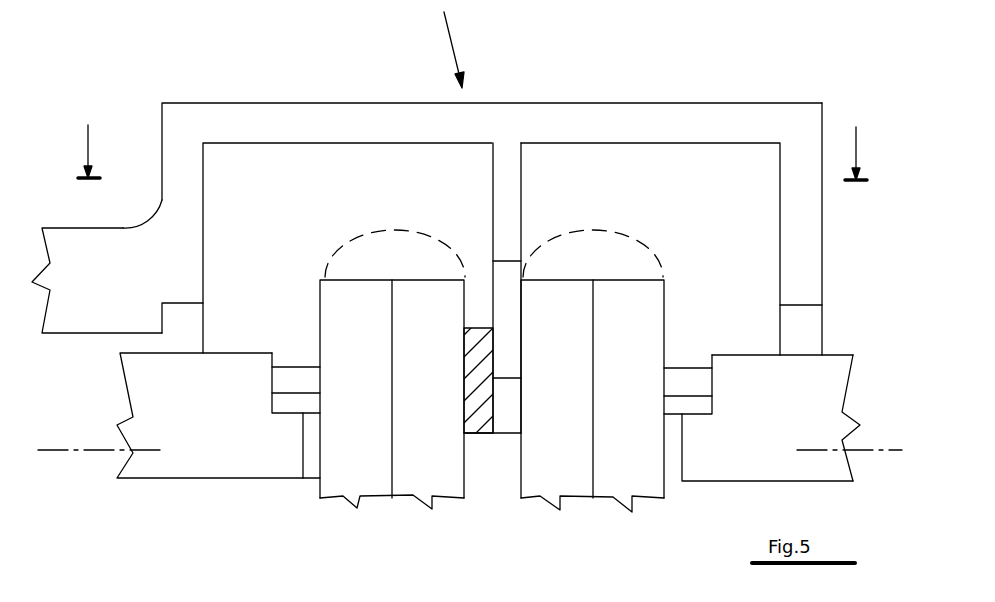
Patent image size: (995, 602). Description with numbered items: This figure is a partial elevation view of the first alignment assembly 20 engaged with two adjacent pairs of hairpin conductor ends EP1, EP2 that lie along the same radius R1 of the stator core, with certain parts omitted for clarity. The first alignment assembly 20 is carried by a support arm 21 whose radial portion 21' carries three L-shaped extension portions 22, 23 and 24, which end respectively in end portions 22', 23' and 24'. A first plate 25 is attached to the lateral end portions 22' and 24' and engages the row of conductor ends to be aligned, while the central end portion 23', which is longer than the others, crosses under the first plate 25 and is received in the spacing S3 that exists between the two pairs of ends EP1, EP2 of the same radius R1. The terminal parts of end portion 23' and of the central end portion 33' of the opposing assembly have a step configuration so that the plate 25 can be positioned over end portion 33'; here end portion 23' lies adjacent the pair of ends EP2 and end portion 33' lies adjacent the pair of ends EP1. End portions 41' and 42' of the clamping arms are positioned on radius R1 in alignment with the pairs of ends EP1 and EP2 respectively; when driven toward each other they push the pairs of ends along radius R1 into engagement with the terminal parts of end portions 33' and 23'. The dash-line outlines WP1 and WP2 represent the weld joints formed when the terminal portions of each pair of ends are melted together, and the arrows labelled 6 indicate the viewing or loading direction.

The first alignment assembly 20 is at (447, 39).
The load direction 6 is at (88, 135).
The support arm 21 is at (97, 322).
The radial portion 21' is at (650, 202).
The extension portion 22 is at (468, 185).
The end portion 22' is at (214, 321).
The extension portion 23 is at (507, 240).
The end portion 23' is at (498, 498).
The extension portion 24 is at (796, 229).
The end portion 24' is at (730, 351).
The first plate 25 is at (288, 382).
The central end portion 33' is at (478, 441).
The end portion 41' is at (295, 493).
The end portion 42' is at (766, 466).
The pair of ends EP1 is at (368, 465).
The pair of ends EP2 is at (622, 457).
The spacing S3 is at (478, 468).
The weld joint WP1 is at (355, 236).
The weld joint WP2 is at (618, 233).
The radius R1 is at (78, 450).